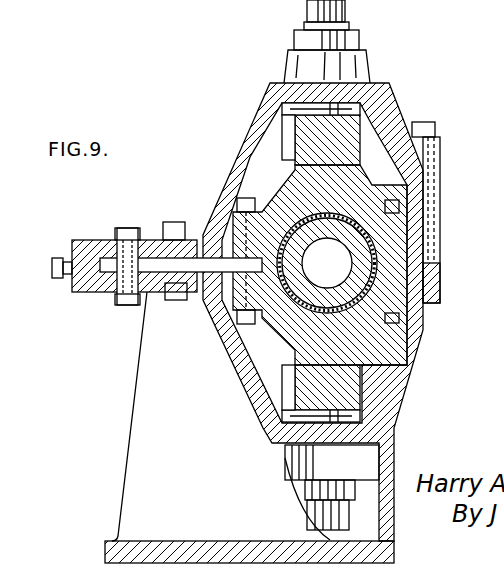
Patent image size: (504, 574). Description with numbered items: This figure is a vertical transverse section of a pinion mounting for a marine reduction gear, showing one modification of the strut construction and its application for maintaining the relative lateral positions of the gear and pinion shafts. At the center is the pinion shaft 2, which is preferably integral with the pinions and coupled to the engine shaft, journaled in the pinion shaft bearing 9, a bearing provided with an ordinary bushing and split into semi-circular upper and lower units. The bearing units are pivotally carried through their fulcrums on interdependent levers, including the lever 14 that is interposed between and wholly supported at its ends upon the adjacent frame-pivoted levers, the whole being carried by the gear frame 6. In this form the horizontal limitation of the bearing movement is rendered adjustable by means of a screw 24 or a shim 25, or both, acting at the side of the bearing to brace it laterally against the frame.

The shaft 2 is at (349, 240).
The gear frame 6 is at (208, 545).
The pinion shaft bearing 9 is at (354, 191).
The lever 14 is at (337, 137).
The screw 24 is at (56, 279).
The shim 25 is at (102, 273).